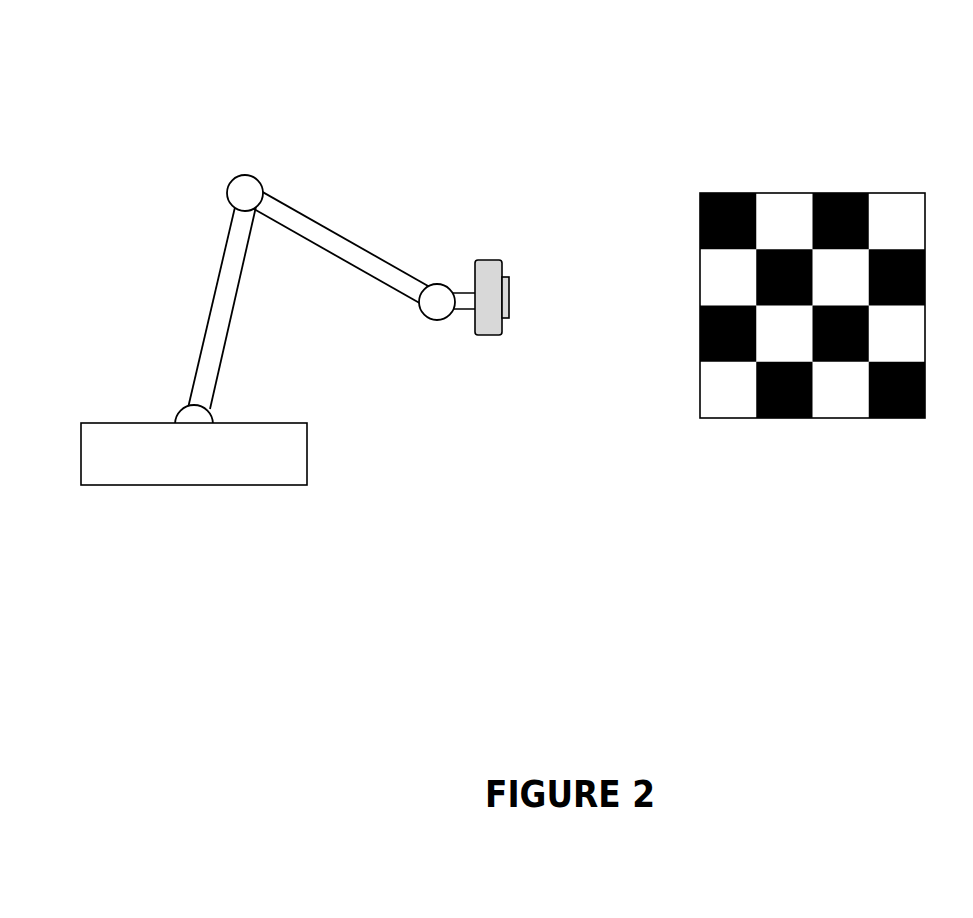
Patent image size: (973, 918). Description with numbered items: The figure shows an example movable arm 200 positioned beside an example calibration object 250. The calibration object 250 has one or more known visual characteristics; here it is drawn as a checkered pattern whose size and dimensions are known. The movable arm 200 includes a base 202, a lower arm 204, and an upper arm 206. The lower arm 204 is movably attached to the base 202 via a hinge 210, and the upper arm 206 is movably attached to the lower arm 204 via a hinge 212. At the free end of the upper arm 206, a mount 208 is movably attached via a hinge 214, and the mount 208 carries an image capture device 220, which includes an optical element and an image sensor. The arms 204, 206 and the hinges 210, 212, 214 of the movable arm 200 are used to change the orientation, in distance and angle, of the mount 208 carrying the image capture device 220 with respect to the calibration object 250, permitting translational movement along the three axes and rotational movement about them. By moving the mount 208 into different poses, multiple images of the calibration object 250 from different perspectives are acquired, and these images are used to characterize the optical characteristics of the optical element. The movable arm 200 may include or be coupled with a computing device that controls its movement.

The movable arm 200 is at (285, 77).
The base 202 is at (193, 486).
The lower arm 204 is at (217, 287).
The upper arm 206 is at (367, 280).
The mount 208 is at (468, 312).
The hinge 210 is at (212, 417).
The hinge 212 is at (263, 186).
The hinge 214 is at (441, 283).
The image capture device 220 is at (510, 310).
The calibration object 250 is at (813, 193).